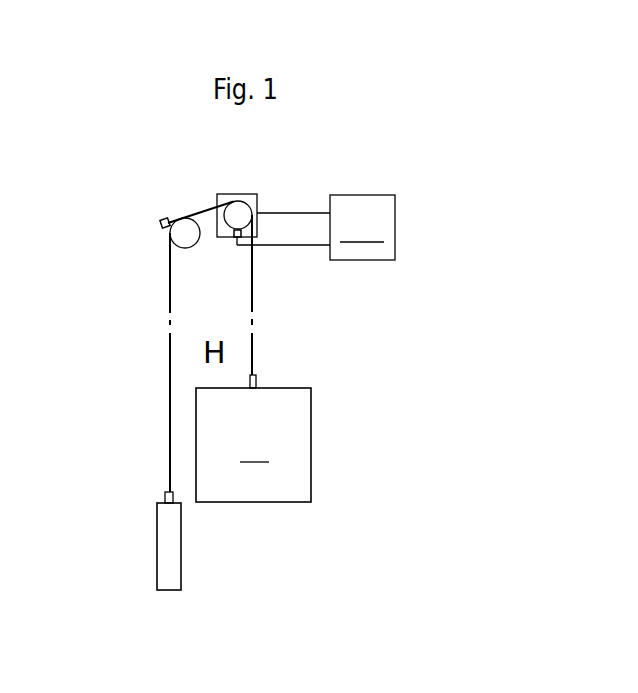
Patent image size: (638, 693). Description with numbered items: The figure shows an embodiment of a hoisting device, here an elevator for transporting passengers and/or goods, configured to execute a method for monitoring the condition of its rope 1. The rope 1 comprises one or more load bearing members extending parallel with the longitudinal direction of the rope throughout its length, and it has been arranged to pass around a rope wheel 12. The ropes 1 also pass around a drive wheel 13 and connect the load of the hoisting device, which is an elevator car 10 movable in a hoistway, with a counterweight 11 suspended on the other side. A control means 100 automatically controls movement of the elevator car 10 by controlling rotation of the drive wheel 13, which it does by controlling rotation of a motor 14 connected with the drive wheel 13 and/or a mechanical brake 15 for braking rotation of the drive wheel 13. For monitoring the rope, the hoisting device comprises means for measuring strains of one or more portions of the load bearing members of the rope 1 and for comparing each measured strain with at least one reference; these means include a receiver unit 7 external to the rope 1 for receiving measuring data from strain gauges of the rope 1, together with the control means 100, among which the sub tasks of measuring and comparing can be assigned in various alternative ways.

The rope 1 is at (253, 286).
The receiver unit 7 is at (159, 221).
The elevator car 10 is at (253, 438).
The counterweight 11 is at (182, 542).
The rope wheel 12 is at (187, 238).
The drive wheel 13 is at (238, 210).
The motor 14 is at (253, 194).
The mechanical brake 15 is at (236, 241).
The control means 100 is at (316, 227).